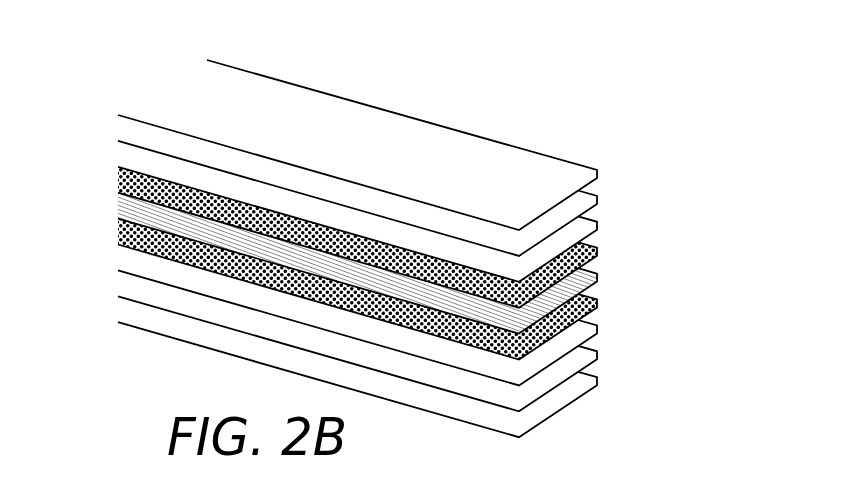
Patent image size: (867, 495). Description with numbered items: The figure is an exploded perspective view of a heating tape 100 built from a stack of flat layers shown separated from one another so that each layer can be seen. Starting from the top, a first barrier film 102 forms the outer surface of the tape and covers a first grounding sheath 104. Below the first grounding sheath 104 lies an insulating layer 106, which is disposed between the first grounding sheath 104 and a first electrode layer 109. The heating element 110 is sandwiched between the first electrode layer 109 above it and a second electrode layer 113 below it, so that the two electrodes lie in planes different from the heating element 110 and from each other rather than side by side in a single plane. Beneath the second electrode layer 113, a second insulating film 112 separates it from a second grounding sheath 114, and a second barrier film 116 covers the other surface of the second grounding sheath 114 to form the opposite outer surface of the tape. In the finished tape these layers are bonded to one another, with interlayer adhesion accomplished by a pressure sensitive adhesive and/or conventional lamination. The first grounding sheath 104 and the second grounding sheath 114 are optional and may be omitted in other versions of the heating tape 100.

The heating tape 100 is at (545, 102).
The first barrier film 102 is at (600, 170).
The first grounding sheath 104 is at (600, 196).
The insulating layer 106 is at (600, 222).
The first electrode layer 109 is at (600, 248).
The heating element 110 is at (600, 274).
The second electrode layer 113 is at (600, 300).
The second insulating film 112 is at (600, 325).
The second grounding sheath 114 is at (600, 351).
The second barrier film 116 is at (600, 377).